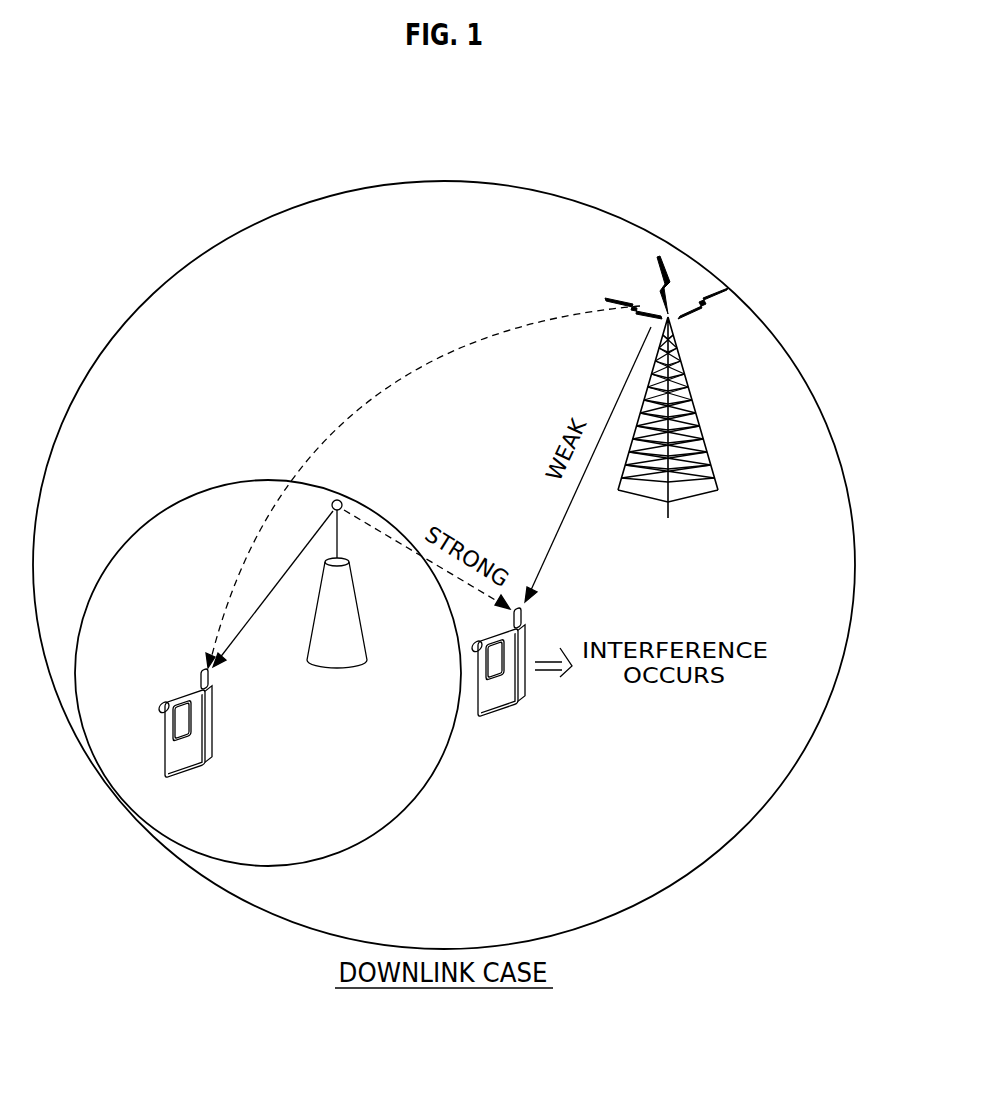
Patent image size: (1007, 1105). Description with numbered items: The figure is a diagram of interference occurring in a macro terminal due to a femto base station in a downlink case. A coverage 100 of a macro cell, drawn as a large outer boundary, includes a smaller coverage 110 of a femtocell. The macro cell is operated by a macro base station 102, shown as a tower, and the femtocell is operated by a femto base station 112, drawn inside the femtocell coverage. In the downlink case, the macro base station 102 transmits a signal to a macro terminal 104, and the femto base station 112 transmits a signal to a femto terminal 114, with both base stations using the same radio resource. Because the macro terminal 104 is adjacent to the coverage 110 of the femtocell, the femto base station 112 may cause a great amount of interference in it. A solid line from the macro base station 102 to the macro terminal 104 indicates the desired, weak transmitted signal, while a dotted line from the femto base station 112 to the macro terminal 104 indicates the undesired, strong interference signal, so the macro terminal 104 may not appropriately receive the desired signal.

The coverage of a macro cell 100 is at (444, 181).
The macro base station 102 is at (708, 457).
The macro terminal 104 is at (493, 778).
The coverage of a femtocell 110 is at (213, 487).
The femto base station 112 is at (323, 728).
The femto terminal 114 is at (183, 680).